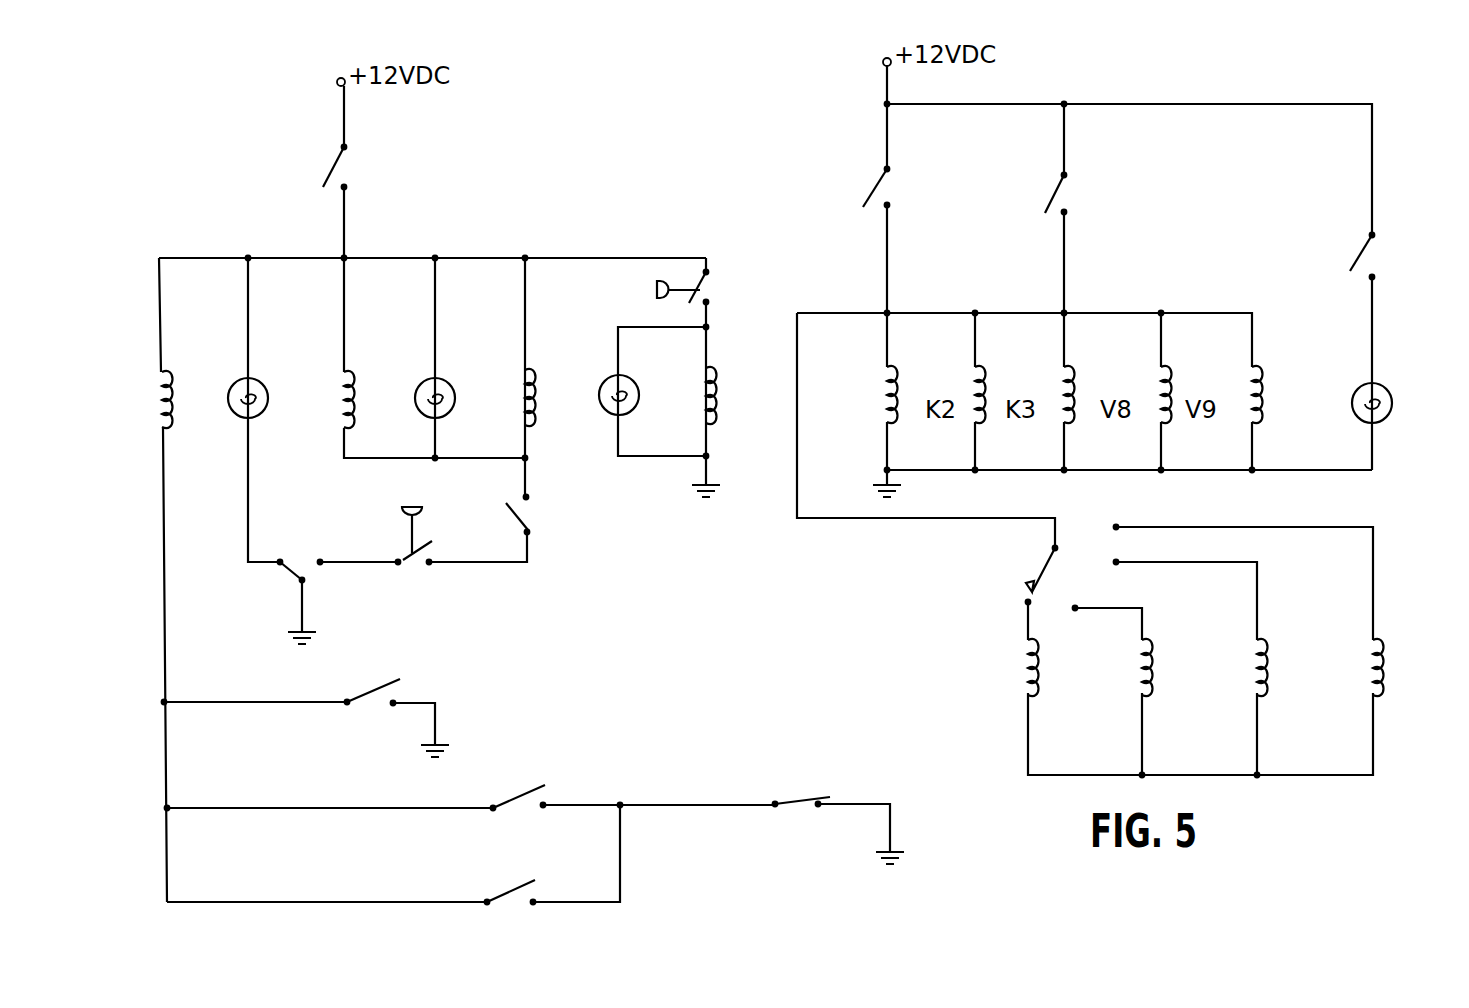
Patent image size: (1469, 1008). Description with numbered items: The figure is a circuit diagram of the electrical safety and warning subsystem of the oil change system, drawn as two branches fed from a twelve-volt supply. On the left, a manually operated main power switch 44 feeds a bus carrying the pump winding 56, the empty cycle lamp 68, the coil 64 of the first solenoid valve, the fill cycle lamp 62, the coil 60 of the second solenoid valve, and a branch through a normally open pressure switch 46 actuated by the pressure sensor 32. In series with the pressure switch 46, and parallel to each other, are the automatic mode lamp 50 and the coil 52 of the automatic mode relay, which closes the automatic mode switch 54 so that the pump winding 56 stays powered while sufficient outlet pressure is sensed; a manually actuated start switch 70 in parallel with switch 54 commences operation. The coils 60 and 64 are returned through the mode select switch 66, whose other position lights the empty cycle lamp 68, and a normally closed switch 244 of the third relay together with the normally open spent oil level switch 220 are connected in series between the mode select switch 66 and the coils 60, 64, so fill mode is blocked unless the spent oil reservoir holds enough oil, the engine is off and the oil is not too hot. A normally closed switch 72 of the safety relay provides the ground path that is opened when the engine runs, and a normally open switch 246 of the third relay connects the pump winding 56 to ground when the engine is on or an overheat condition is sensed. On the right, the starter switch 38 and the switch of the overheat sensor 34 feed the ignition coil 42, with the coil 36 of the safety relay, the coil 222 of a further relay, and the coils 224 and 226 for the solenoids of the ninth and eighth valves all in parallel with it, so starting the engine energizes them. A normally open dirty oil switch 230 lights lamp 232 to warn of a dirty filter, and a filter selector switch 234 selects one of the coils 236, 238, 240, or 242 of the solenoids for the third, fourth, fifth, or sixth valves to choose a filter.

The pressure sensor 32 is at (678, 290).
The overheat sensor 34 is at (1050, 200).
The coil of safety relay K2 36 is at (972, 385).
The starter switch 38 is at (876, 190).
The ignition coil 42 is at (883, 386).
The main power switch 44 is at (336, 168).
The pressure switch 46 is at (705, 288).
The automatic mode lamp 50 is at (598, 388).
The coil of automatic mode relay K1 52 is at (712, 372).
The automatic mode switch 54 is at (520, 790).
The winding of the pump 56 is at (153, 405).
The coil of solenoid valve V2 60 is at (517, 383).
The fill cycle lamp 62 is at (415, 387).
The coil of solenoid valve V1 64 is at (342, 400).
The mode select switch 66 is at (292, 562).
The empty cycle lamp 68 is at (232, 388).
The start switch 70 is at (510, 885).
The normally closed switch of relay K2 72 is at (798, 797).
The level switch 220 is at (413, 555).
The coil of relay K5 222 is at (1060, 385).
The coil for solenoid of valve V9 224 is at (1152, 385).
The coil for solenoid of valve V8 226 is at (1240, 390).
The dirty oil switch 230 is at (1368, 253).
The lamp 232 is at (1392, 415).
The filter selector switch 234 is at (1043, 577).
The coil of solenoid for valve V3 236 is at (1020, 683).
The coil of solenoid for valve V4 238 is at (1135, 683).
The coil of solenoid for valve V5 240 is at (1250, 683).
The coil of solenoid for valve V6 242 is at (1365, 676).
The normally closed switch of relay K3 244 is at (522, 520).
The normally open switch of relay K3 246 is at (395, 690).